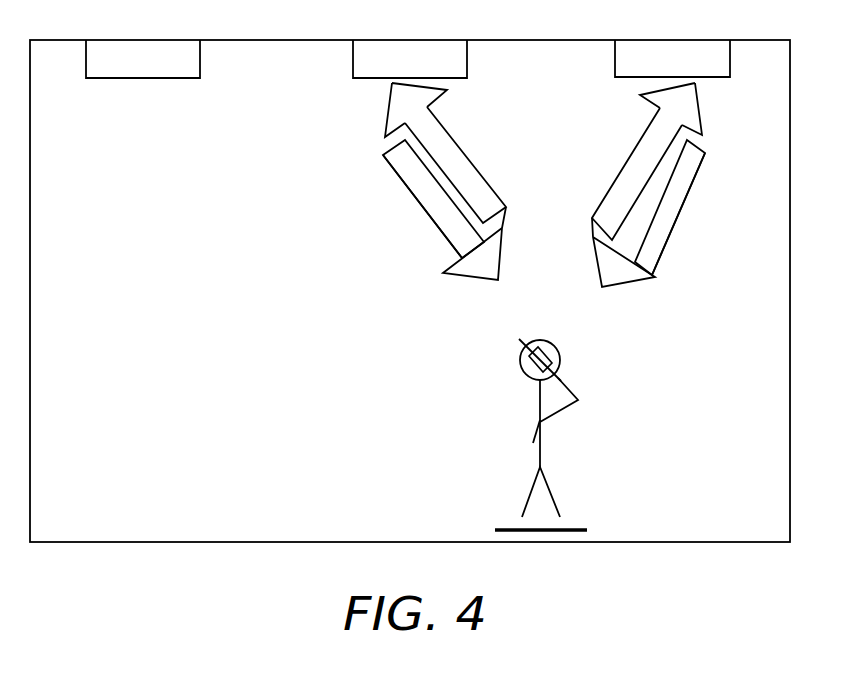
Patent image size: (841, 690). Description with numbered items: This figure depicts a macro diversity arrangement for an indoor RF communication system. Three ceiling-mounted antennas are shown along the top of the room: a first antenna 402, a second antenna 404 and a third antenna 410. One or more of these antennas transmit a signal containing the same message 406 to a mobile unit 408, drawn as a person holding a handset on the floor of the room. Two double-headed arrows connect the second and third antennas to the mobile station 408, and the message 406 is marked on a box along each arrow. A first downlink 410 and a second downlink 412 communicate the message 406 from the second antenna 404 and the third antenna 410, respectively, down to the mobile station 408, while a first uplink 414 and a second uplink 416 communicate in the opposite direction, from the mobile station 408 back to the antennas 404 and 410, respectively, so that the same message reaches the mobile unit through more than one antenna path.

The first antenna 402 is at (137, 78).
The second antenna 404 is at (411, 40).
The message 406 is at (544, 207).
The mobile unit 408 is at (539, 401).
The third antenna 410 is at (670, 40).
The second downlink 412 is at (677, 218).
The first uplink 414 is at (465, 155).
The second uplink 416 is at (628, 157).